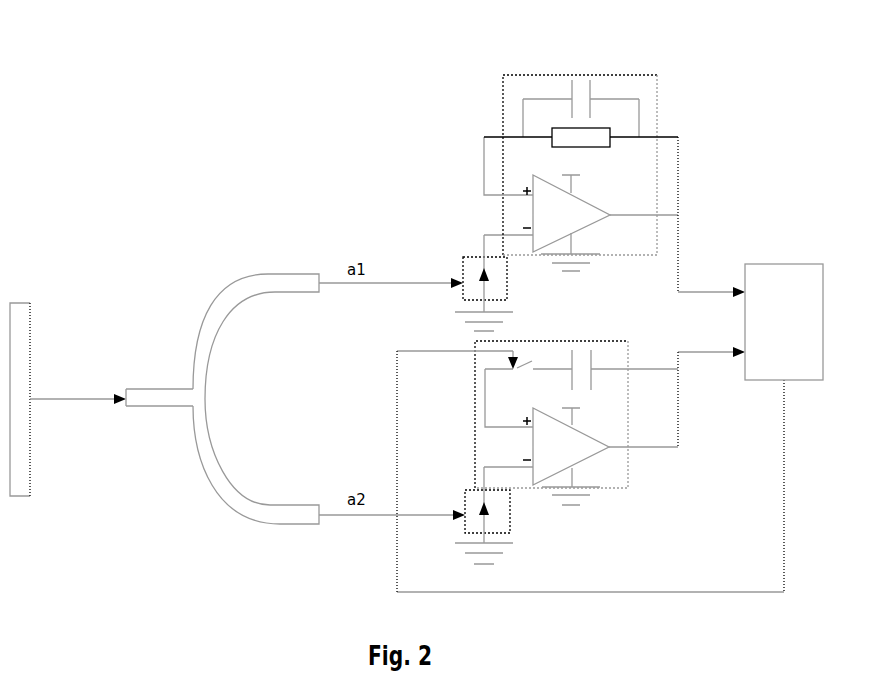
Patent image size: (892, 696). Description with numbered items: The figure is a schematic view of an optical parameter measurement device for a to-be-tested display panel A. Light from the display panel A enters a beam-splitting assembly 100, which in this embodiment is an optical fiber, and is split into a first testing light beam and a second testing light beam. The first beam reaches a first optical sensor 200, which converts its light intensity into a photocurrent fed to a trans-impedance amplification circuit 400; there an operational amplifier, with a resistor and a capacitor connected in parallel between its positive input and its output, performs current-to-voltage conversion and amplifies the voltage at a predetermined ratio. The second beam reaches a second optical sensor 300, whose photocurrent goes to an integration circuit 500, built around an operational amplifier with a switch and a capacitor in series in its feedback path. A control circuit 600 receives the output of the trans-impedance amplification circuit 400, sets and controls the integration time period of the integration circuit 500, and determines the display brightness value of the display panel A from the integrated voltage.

The to-be-tested display panel A is at (22, 303).
The beam-splitting assembly 100 is at (268, 274).
The first optical sensor 200 is at (470, 257).
The second optical sensor 300 is at (473, 490).
The trans-impedance amplification circuit 400 is at (572, 75).
The integration circuit 500 is at (564, 341).
The control circuit 600 is at (785, 264).